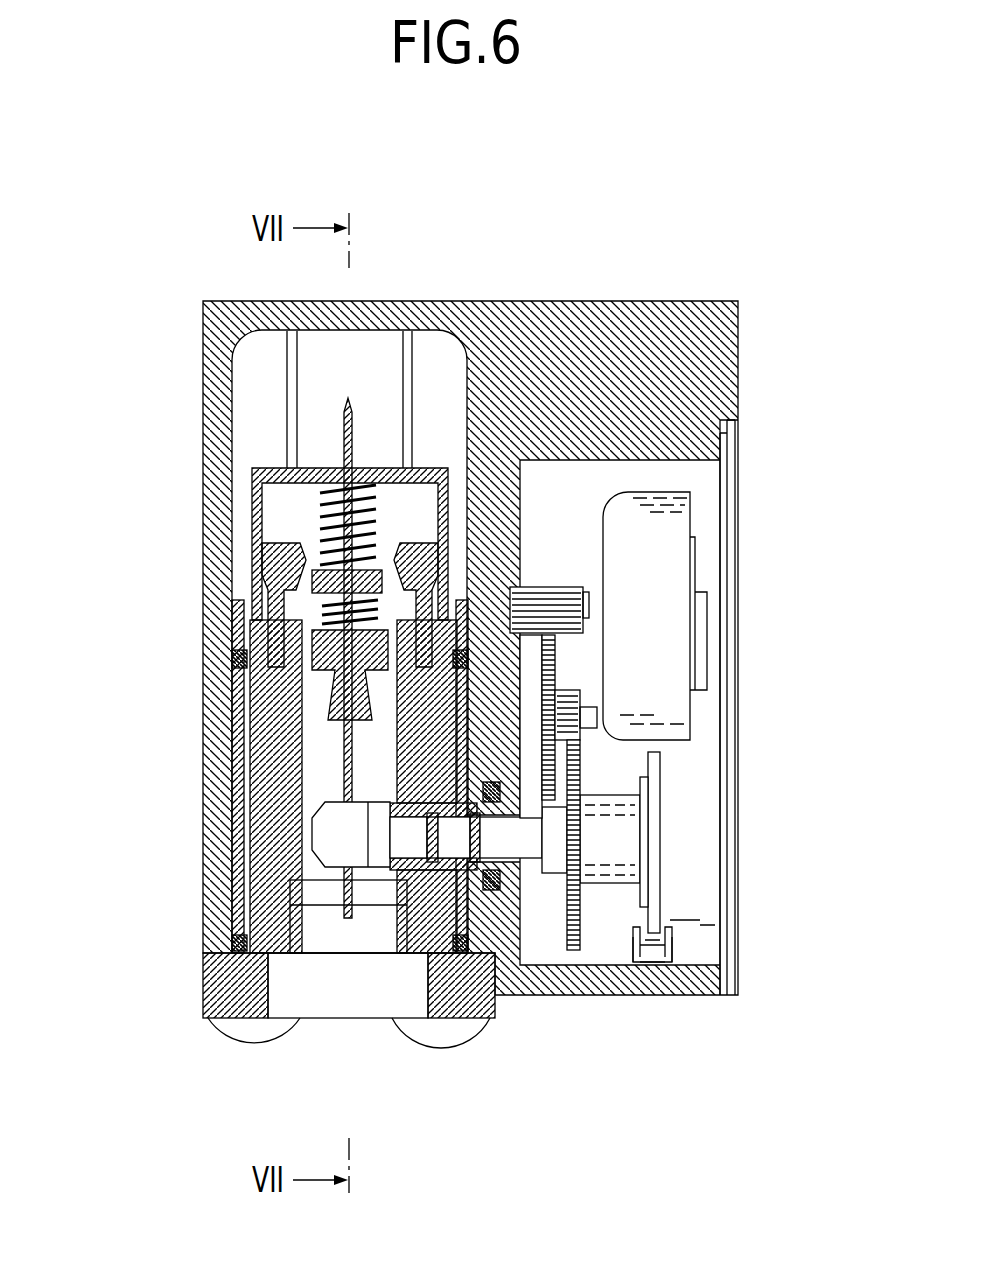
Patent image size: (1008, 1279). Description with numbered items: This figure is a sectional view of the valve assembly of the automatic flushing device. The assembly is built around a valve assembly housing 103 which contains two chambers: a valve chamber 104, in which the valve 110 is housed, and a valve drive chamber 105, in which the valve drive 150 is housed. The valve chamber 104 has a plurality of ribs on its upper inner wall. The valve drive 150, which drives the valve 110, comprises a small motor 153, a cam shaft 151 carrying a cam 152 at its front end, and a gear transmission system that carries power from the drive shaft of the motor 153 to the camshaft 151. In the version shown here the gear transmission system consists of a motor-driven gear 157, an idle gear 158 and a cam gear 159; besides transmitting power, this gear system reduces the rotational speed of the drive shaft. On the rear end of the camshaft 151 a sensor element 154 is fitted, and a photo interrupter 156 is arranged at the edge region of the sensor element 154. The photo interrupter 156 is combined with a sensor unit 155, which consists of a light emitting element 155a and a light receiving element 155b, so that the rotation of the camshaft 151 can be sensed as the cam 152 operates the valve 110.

The valve assembly housing 103 is at (470, 581).
The valve chamber 104 is at (400, 316).
The valve drive chamber 105 is at (771, 922).
The valve 110 is at (262, 450).
The valve drive 150 is at (705, 524).
The cam shaft 151 is at (510, 845).
The cam 152 is at (345, 838).
The small motor 153 is at (737, 616).
The sensor element 154 is at (756, 828).
The sensor unit 155 is at (737, 1137).
The light emitting element 155a is at (595, 1039).
The light receiving element 155b is at (694, 1039).
The photo interrupter 156 is at (752, 960).
The motor-driven gear 157 is at (689, 577).
The idle gear 158 is at (707, 735).
The cam gear 159 is at (719, 845).